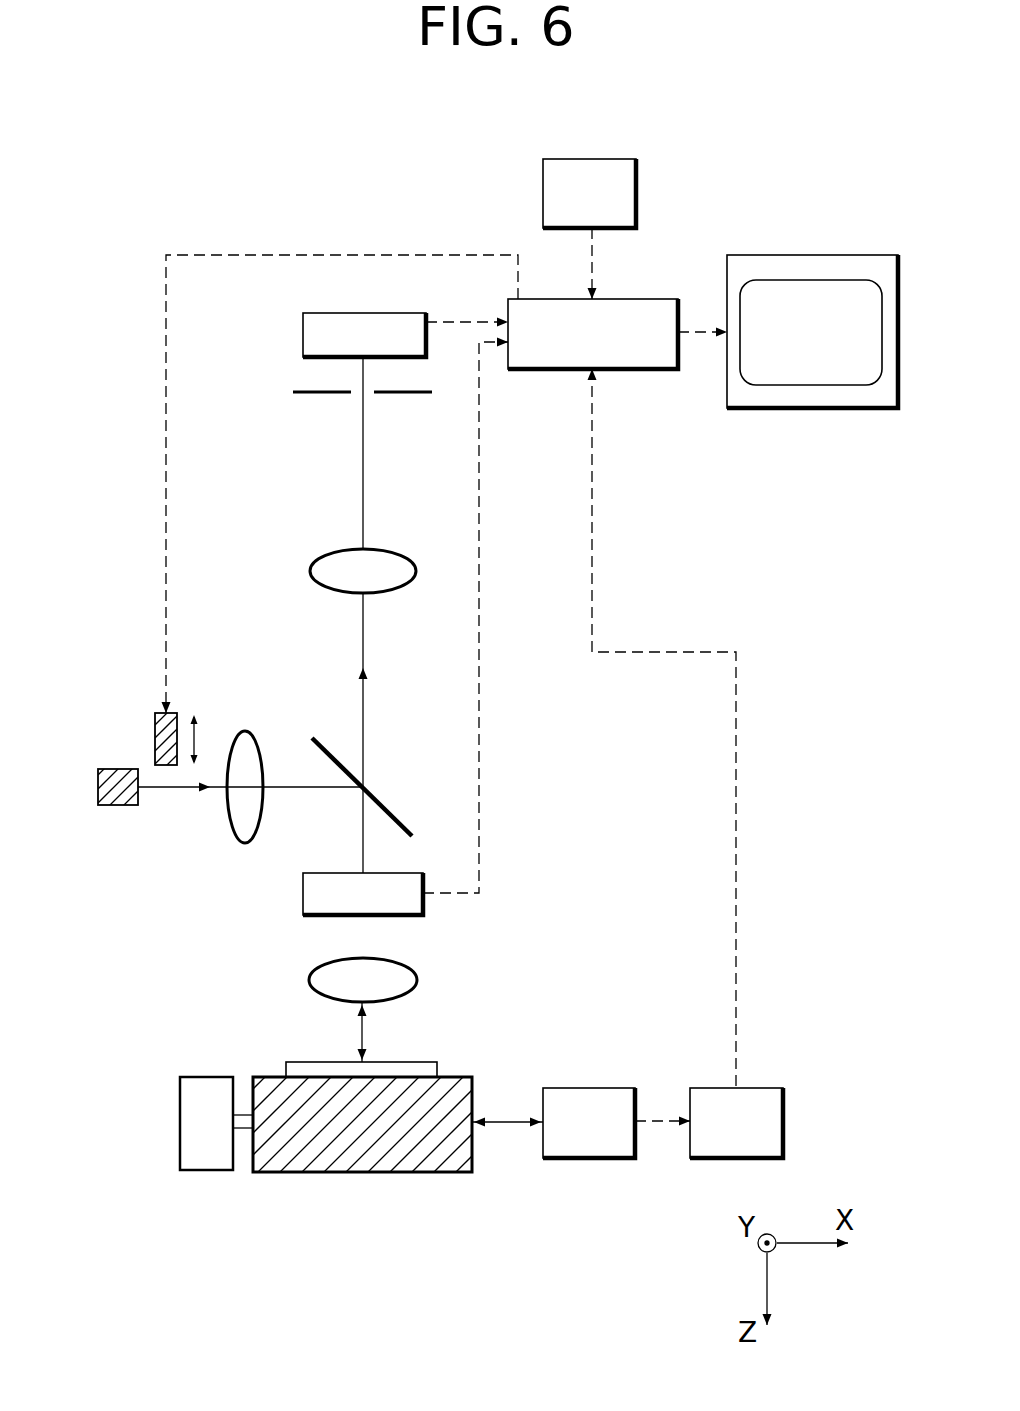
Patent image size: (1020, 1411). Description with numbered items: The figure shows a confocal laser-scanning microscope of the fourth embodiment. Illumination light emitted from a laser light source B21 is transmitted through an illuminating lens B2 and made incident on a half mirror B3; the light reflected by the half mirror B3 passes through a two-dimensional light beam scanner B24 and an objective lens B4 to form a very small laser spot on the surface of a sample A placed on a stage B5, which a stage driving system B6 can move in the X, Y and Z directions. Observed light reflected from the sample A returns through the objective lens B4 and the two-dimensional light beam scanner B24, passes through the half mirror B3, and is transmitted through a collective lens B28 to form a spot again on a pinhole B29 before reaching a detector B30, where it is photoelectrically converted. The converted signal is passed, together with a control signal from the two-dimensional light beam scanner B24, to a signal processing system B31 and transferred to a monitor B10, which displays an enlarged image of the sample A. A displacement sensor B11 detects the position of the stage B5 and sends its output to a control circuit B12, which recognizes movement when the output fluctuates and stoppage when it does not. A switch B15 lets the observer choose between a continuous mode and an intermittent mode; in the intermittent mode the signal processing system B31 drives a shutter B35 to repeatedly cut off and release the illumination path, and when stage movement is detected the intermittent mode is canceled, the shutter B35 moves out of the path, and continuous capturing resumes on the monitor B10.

The detector B30 is at (303, 335).
The pinhole B29 is at (300, 394).
The collective lens B28 is at (310, 568).
The illuminating lens B2 is at (245, 733).
The half mirror B3 is at (405, 824).
The shutter B35 is at (155, 735).
The laser light source B21 is at (118, 807).
The two-dimensional light beam scanner B24 is at (303, 893).
The objective lens B4 is at (415, 979).
The sample A is at (440, 1072).
The stage B5 is at (388, 1173).
The stage driving system B6 is at (200, 1077).
The displacement sensor B11 is at (592, 1088).
The control circuit B12 is at (772, 1088).
The switch B15 is at (636, 181).
The signal processing system B31 is at (640, 356).
The monitor B10 is at (823, 255).